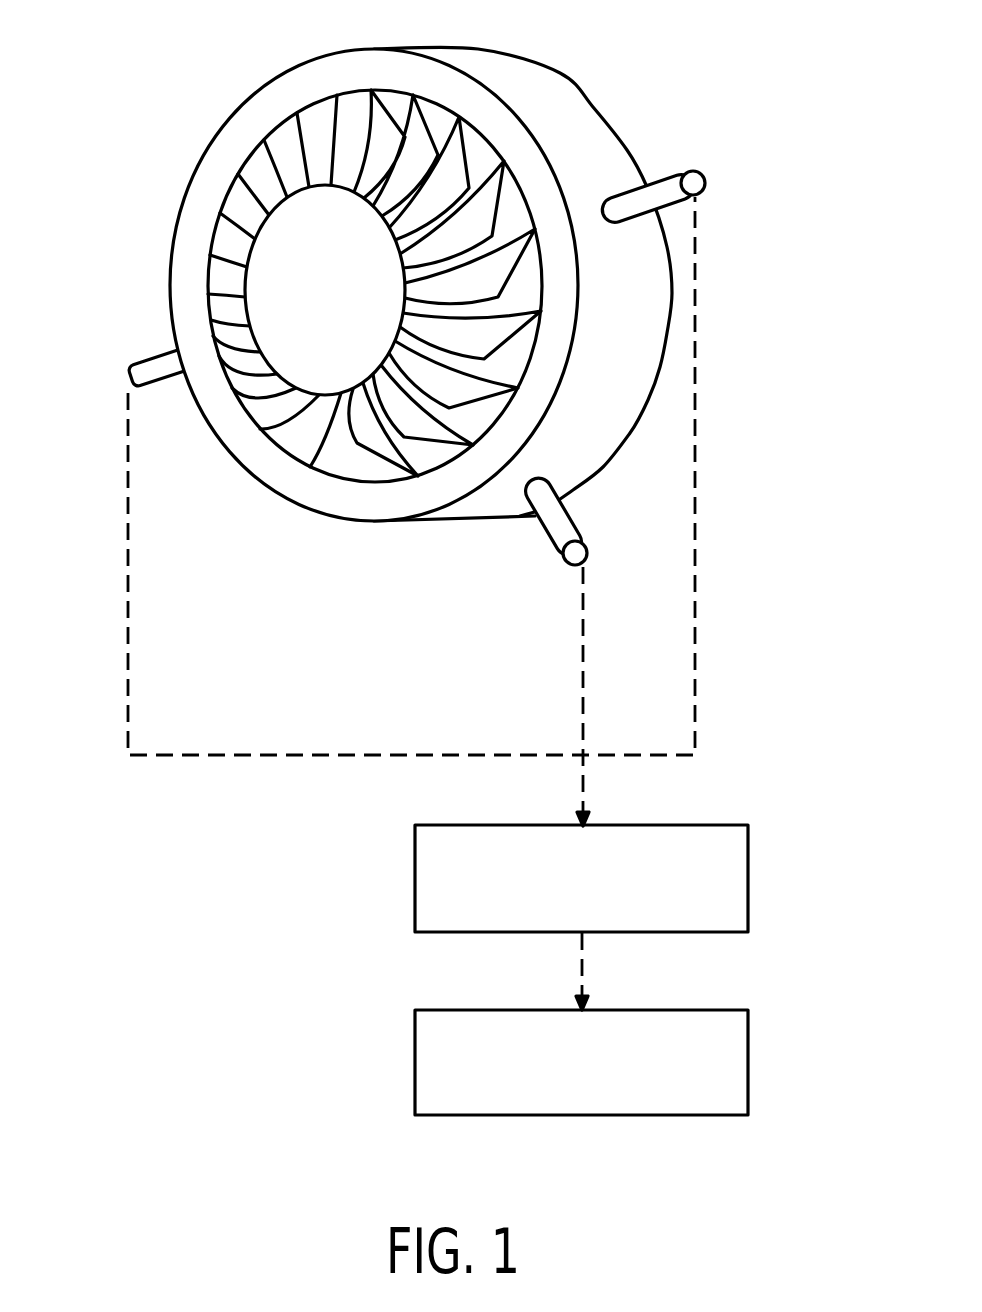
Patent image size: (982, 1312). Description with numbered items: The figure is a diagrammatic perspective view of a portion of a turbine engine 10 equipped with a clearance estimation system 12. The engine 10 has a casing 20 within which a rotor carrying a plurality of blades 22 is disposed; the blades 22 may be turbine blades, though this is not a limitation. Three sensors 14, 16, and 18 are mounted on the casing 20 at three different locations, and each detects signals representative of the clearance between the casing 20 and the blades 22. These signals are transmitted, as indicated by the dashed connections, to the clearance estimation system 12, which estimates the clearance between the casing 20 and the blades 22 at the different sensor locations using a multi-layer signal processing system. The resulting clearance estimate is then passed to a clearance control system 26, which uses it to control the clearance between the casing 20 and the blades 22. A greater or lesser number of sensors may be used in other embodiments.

The turbine engine 10 is at (119, 131).
The clearance estimation system 12 is at (748, 872).
The sensor 14 is at (687, 173).
The sensor 16 is at (557, 493).
The sensor 18 is at (165, 383).
The casing 20 is at (478, 49).
The blades 22 is at (215, 288).
The clearance control system 26 is at (748, 1050).